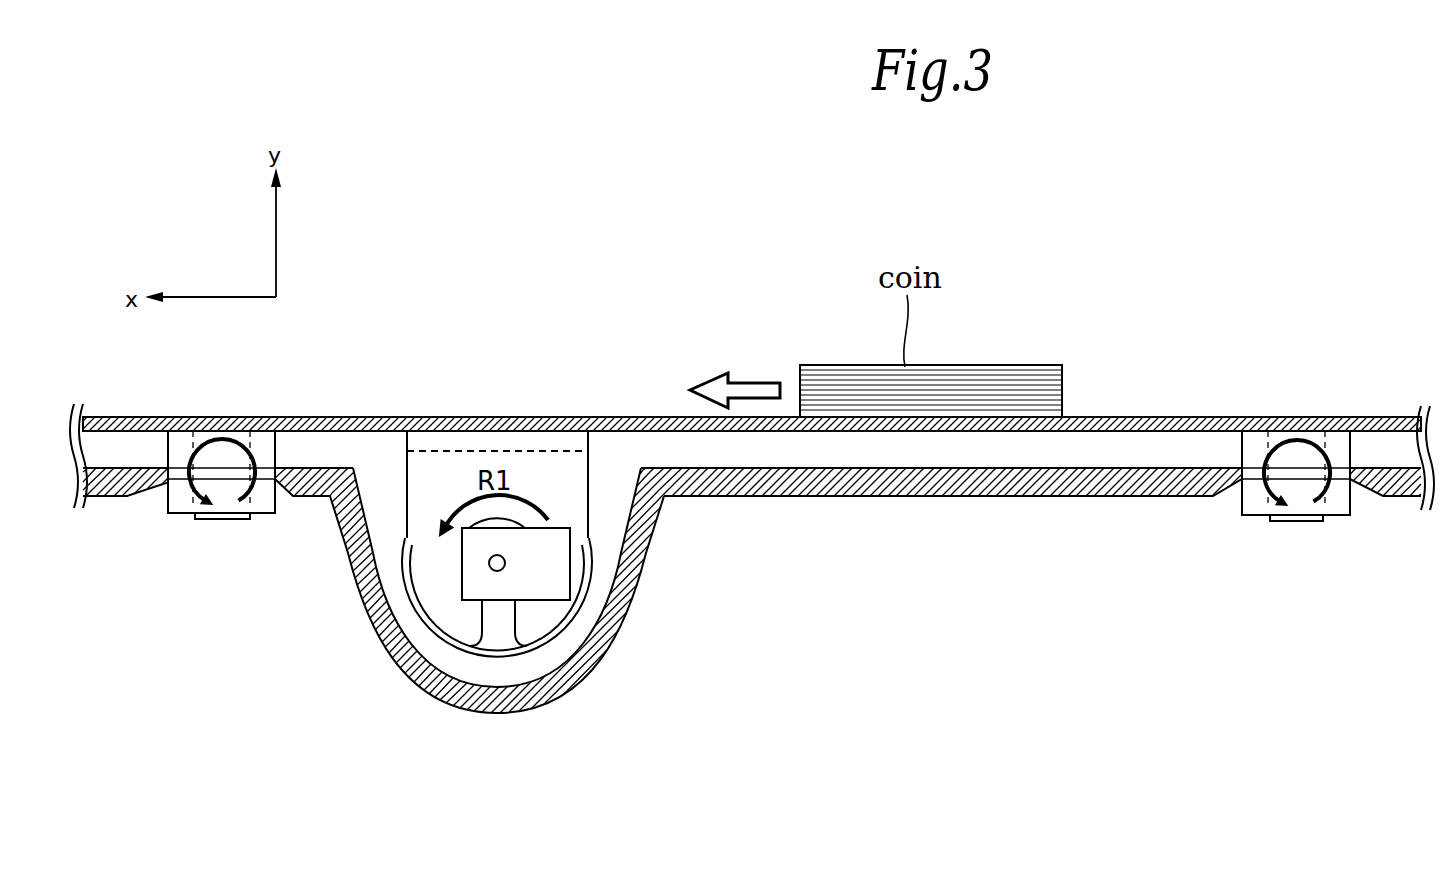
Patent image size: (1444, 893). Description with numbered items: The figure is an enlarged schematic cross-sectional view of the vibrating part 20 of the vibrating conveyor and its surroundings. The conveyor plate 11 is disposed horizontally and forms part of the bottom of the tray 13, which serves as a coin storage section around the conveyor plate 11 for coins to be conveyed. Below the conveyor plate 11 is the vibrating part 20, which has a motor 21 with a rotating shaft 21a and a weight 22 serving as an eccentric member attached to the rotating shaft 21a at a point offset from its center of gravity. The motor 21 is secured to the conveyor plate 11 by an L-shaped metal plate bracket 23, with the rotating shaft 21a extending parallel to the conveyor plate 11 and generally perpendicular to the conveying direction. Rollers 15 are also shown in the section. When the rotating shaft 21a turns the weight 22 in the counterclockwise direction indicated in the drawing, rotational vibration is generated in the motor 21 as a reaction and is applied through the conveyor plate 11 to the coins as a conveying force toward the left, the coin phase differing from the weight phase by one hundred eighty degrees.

The conveyor plate 11 is at (375, 417).
The tray 13 is at (1012, 490).
The conveying roller 15 is at (265, 505).
The vibrating part 20 is at (602, 503).
The motor 21 is at (498, 646).
The rotating shaft 21a is at (488, 564).
The weight 22 is at (557, 570).
The L-shaped metal plate bracket 23 is at (420, 488).